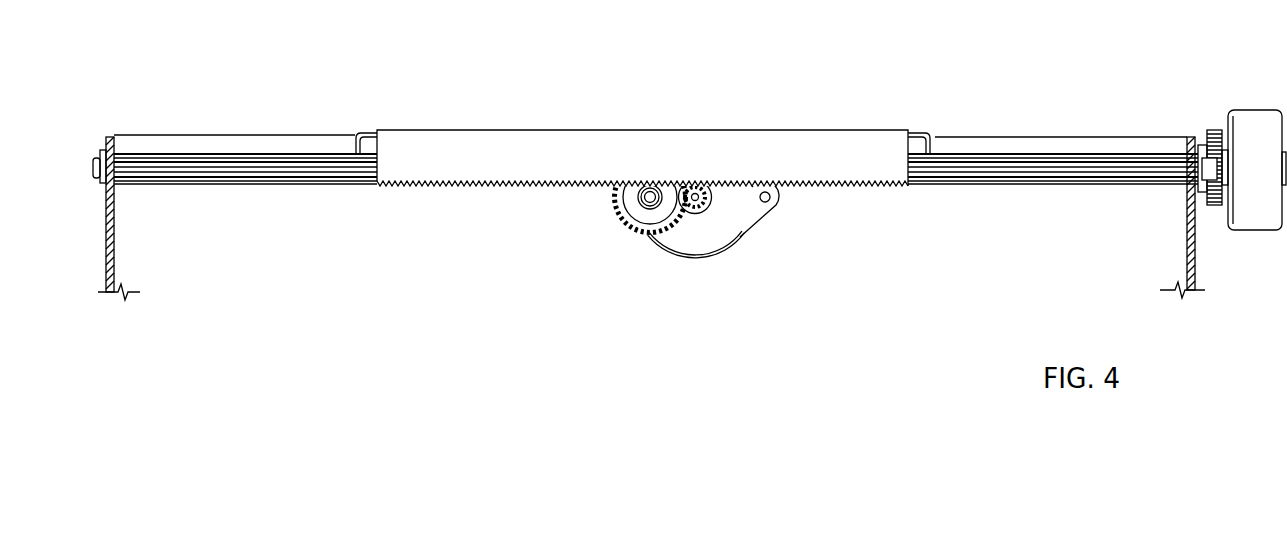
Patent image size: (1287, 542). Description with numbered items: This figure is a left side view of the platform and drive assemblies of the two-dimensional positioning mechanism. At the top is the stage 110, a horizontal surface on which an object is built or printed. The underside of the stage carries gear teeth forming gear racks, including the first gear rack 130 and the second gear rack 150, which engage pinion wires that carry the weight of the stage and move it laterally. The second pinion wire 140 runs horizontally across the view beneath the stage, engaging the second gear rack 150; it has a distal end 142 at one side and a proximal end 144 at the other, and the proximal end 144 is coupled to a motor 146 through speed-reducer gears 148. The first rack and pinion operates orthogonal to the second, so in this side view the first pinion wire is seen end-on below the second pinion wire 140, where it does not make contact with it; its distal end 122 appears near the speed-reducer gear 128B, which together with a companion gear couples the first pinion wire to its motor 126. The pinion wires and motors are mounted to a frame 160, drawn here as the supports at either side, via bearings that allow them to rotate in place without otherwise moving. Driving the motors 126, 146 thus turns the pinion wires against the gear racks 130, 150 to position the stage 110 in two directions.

The stage 110 is at (570, 129).
The distal end 122 is at (658, 200).
The motor 126 is at (723, 226).
The speed-reducer gear 128B is at (638, 225).
The first gear rack 130 is at (447, 188).
The second pinion wire 140 is at (950, 185).
The distal end 142 is at (125, 180).
The proximal end 144 is at (1035, 183).
The motor 146 is at (1250, 127).
The speed-reducer gears 148 is at (1210, 140).
The second gear rack 150 is at (352, 146).
The frame 160 is at (115, 243).